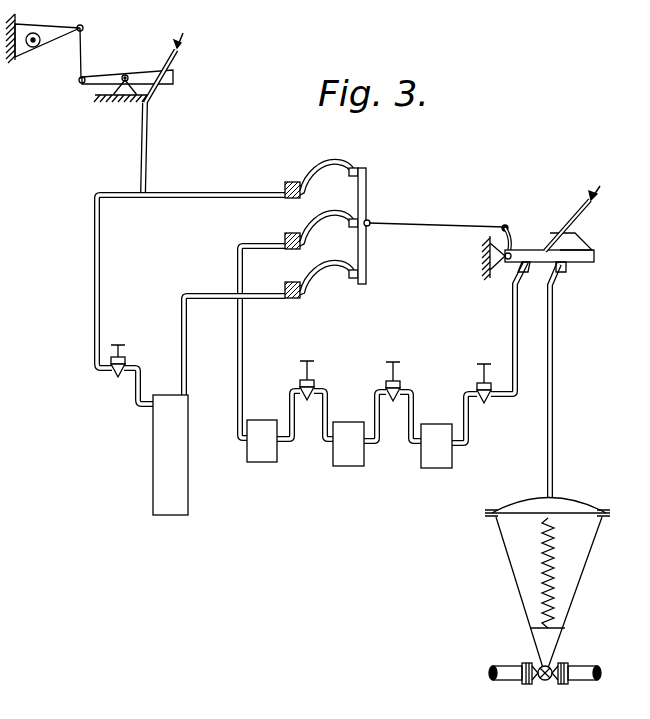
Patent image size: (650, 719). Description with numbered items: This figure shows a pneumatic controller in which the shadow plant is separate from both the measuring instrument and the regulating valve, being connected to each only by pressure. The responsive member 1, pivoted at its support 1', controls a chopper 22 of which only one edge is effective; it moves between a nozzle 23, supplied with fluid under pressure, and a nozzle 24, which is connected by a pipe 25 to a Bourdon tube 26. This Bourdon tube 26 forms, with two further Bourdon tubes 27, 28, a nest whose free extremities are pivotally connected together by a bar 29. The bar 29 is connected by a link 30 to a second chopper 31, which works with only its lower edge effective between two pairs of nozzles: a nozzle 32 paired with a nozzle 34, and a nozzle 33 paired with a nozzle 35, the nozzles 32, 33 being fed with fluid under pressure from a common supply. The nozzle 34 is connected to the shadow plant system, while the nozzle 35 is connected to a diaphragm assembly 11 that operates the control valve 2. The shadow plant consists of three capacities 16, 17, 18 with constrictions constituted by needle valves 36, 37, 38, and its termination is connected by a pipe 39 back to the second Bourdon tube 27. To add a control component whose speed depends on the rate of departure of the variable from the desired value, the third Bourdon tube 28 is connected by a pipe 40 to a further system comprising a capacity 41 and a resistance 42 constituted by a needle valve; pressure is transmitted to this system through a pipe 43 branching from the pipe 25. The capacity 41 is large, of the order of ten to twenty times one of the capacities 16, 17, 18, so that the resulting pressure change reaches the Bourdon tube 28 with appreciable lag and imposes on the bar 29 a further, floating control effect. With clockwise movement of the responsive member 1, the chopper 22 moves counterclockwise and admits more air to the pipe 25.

The responsive member 1 is at (44, 31).
The pivot 1' is at (44, 50).
The control valve 2 is at (549, 666).
The diaphragm assembly 11 is at (583, 563).
The capacity 16 is at (440, 454).
The capacity 17 is at (352, 452).
The capacity 18 is at (267, 448).
The chopper 22 is at (135, 75).
The nozzle 23 is at (172, 62).
The nozzle 24 is at (157, 95).
The pipe 25 is at (140, 148).
The Bourdon tube 26 is at (348, 159).
The Bourdon tube 27 is at (350, 210).
The Bourdon tube 28 is at (350, 260).
The bar 29 is at (368, 209).
The link 30 is at (478, 226).
The second chopper 31 is at (528, 250).
The nozzle 32 is at (548, 232).
The nozzle 33 is at (592, 248).
The nozzle 34 is at (520, 265).
The nozzle 35 is at (566, 268).
The needle valve 36 is at (486, 371).
The needle valve 37 is at (398, 370).
The needle valve 38 is at (309, 369).
The pipe 39 is at (243, 362).
The pipe 40 is at (182, 337).
The capacity 41 is at (158, 433).
The resistance 42 is at (106, 372).
The pipe 43 is at (96, 252).